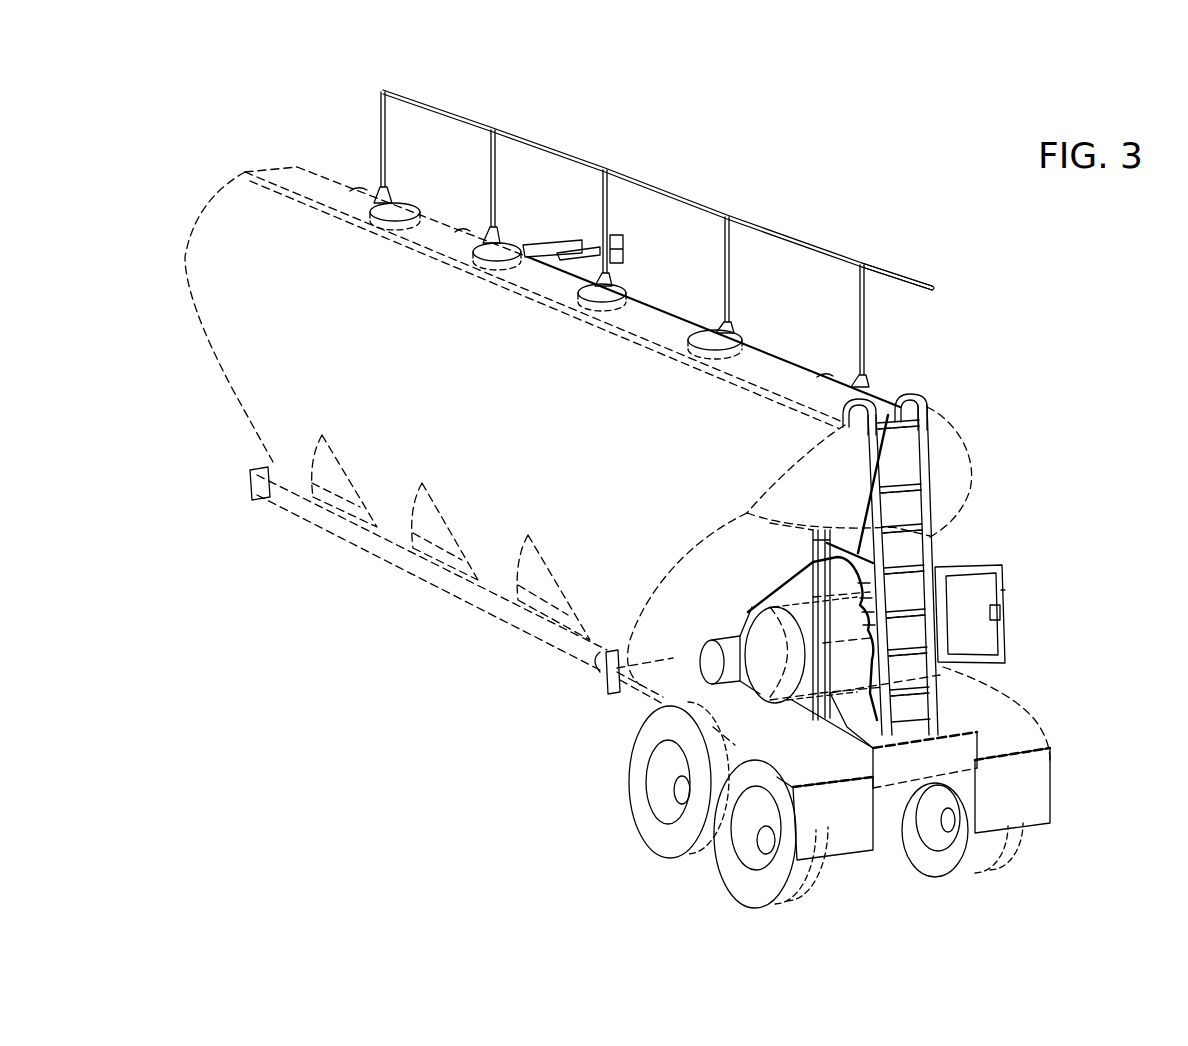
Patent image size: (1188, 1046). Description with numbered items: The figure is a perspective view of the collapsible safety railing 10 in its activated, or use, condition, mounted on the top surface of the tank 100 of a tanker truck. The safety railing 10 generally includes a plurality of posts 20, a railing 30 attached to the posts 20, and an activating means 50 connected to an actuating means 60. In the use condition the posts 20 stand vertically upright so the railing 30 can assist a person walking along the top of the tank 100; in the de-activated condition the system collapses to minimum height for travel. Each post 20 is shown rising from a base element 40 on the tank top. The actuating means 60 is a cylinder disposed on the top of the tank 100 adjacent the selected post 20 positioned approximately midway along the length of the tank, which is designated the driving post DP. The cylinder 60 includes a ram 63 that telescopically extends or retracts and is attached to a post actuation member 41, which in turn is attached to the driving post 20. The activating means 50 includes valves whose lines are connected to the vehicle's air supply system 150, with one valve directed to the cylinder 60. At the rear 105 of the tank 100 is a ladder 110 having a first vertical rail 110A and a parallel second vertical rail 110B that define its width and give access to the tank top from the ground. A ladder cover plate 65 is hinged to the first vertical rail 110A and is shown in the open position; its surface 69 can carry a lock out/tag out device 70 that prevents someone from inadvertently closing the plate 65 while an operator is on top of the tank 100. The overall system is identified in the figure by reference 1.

The fall protection system 1 is at (606, 170).
The collapsible safety railing 10 is at (478, 120).
The post 20 is at (380, 150).
The railing 30 is at (820, 240).
The base pad 40 is at (365, 188).
The post actuation member 41 is at (610, 230).
The actuating means 60 is at (535, 250).
The ram 63 is at (588, 252).
The driving post DP is at (607, 218).
The ladder cover plate 65 is at (1003, 572).
The surface 69 is at (1000, 597).
The lock out/tag out device 70 is at (1000, 618).
The tank 100 is at (292, 400).
The rear of the tank 105 is at (945, 490).
The ladder 110 is at (937, 713).
The first vertical rail 110A is at (925, 433).
The second vertical rail 110B is at (873, 432).
The air supply system 150 is at (717, 658).
The activating means 50 is at (867, 642).